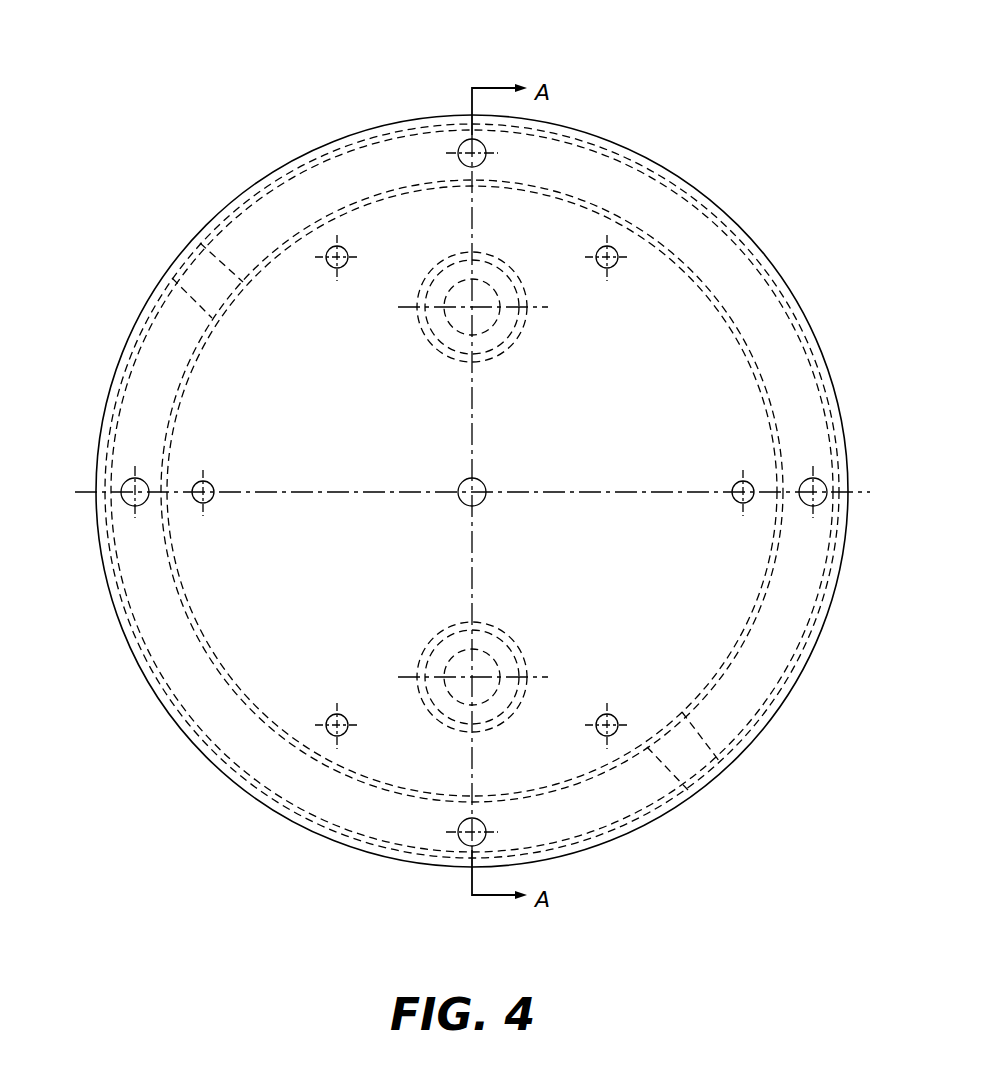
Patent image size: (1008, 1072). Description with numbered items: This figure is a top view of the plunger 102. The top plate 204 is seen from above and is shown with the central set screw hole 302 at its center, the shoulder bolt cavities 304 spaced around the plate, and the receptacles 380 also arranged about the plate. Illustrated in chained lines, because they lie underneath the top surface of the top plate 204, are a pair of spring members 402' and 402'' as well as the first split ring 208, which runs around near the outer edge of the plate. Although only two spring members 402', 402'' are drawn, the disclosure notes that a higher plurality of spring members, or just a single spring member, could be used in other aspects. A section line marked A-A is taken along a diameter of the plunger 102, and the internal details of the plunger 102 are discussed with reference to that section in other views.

The plunger 102 is at (200, 96).
The top plate 204 is at (672, 295).
The first split ring 208 is at (790, 350).
The central set screw hole 302 is at (478, 506).
The shoulder bolt cavities 304 is at (486, 150).
The receptacles 380 is at (340, 268).
The spring member 402' is at (514, 328).
The spring member 402'' is at (503, 664).